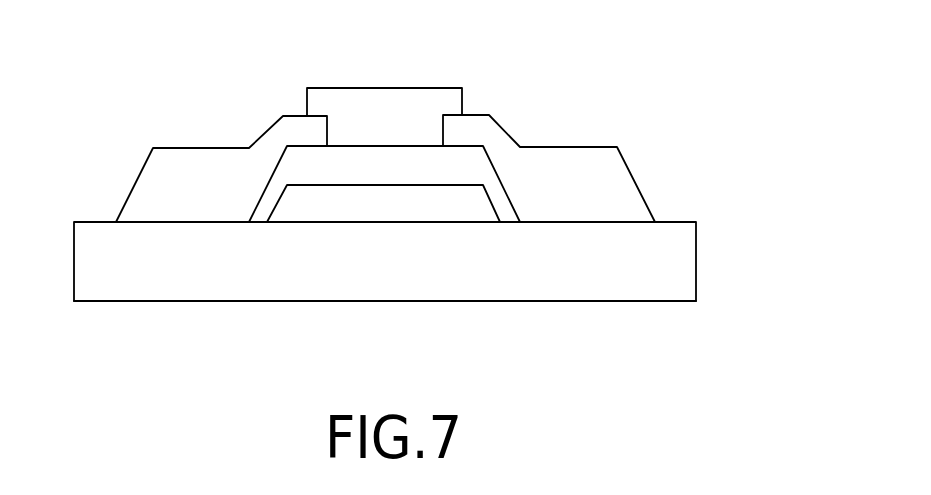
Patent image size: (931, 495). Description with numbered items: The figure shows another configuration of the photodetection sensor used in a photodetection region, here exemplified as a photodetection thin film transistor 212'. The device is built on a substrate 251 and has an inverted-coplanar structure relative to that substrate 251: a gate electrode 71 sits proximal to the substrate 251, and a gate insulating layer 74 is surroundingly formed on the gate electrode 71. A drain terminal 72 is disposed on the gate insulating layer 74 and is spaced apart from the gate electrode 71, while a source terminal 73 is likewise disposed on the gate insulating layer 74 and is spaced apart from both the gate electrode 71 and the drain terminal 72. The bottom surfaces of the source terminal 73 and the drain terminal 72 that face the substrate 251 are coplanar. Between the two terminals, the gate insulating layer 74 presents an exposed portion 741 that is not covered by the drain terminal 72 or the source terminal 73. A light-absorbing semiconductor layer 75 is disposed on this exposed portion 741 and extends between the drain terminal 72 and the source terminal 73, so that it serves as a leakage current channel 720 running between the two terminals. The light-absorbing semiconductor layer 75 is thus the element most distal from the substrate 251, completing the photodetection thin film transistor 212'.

The gate electrode 71 is at (453, 212).
The substrate 251 is at (380, 275).
The drain terminal 72 is at (158, 192).
The source terminal 73 is at (613, 187).
The gate insulating layer 74 is at (470, 166).
The leakage current channel 720 is at (338, 170).
The exposed portion of the gate insulating layer 741 is at (406, 145).
The light-absorbing semiconductor layer 75 is at (323, 98).
The photodetection thin film transistor 212' is at (634, 51).